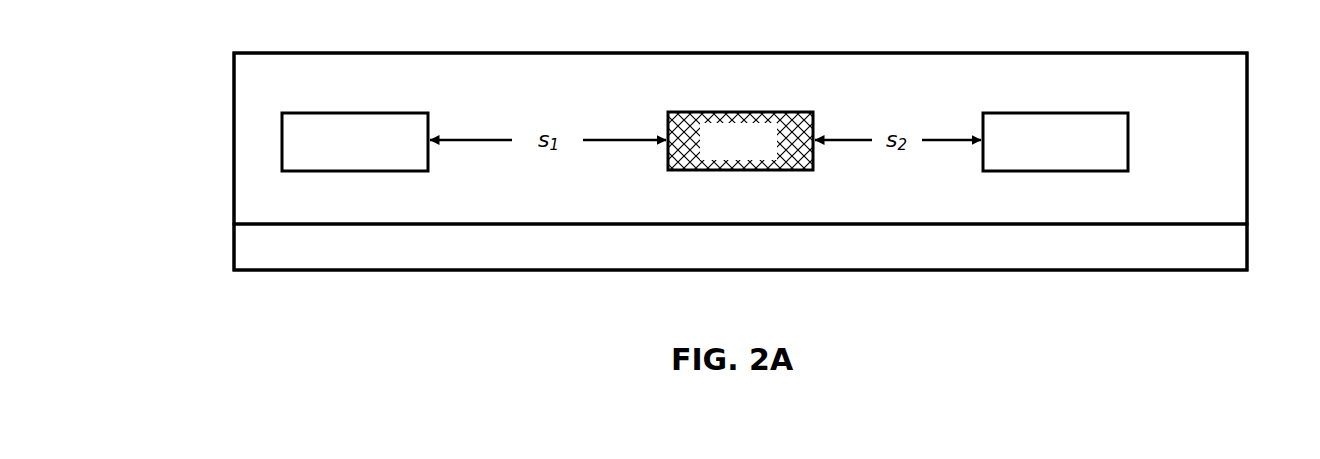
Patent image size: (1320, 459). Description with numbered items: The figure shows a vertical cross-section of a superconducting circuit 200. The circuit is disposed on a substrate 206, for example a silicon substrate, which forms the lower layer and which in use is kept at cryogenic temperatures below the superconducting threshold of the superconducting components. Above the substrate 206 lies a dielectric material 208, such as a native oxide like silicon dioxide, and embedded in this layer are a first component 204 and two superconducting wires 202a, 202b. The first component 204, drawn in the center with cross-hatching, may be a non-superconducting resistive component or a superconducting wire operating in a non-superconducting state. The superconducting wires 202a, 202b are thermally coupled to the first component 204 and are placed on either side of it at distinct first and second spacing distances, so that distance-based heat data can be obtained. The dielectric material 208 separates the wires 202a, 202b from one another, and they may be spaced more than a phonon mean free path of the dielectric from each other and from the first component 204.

The superconducting circuit 200 is at (150, 104).
The superconducting wire 202a is at (327, 154).
The superconducting wire 202b is at (1027, 154).
The first component 204 is at (718, 152).
The substrate 206 is at (719, 261).
The dielectric material 208 is at (720, 87).